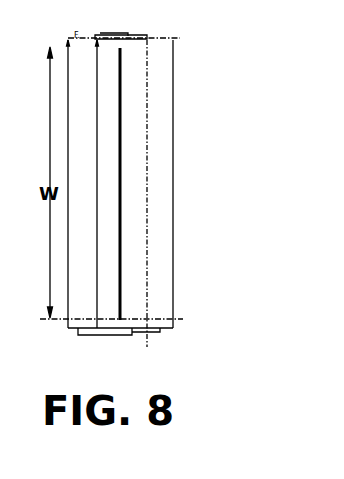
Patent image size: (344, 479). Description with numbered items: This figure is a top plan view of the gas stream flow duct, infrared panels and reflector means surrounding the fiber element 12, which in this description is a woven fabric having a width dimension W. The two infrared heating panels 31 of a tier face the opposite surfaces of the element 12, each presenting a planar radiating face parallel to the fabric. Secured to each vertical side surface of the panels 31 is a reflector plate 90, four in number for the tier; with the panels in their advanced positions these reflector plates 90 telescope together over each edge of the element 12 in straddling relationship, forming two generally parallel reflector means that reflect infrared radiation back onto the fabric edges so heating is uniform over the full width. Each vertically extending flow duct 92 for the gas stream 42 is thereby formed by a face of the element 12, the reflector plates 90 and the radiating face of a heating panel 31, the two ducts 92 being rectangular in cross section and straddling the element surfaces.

The infrared heating panel 31 is at (78, 105).
The gas stream 42 is at (135, 153).
The flow duct 92 is at (110, 173).
The fiber element 12 is at (120, 227).
The reflector plate 90 is at (142, 35).